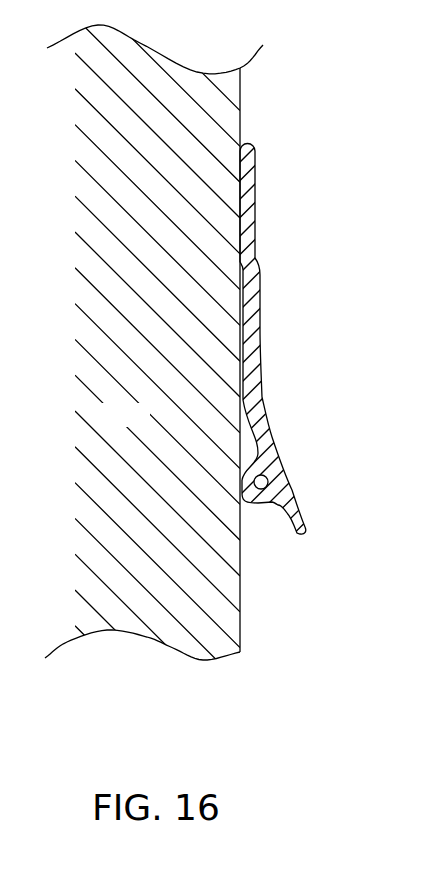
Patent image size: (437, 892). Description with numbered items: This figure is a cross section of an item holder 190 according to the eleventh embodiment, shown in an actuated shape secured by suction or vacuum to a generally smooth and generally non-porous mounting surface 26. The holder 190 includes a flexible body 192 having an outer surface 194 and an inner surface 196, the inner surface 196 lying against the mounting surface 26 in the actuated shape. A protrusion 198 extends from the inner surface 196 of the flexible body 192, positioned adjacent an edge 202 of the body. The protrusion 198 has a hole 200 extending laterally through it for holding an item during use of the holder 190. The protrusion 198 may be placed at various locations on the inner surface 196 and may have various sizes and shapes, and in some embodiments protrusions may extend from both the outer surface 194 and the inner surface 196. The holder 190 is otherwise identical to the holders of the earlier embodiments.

The mounting surface 26 is at (256, 609).
The item holder 190 is at (258, 370).
The flexible body 192 is at (257, 198).
The outer surface 194 is at (268, 349).
The inner surface 196 is at (232, 445).
The protrusion 198 is at (243, 502).
The hole 200 is at (270, 477).
The edge 202 is at (297, 535).